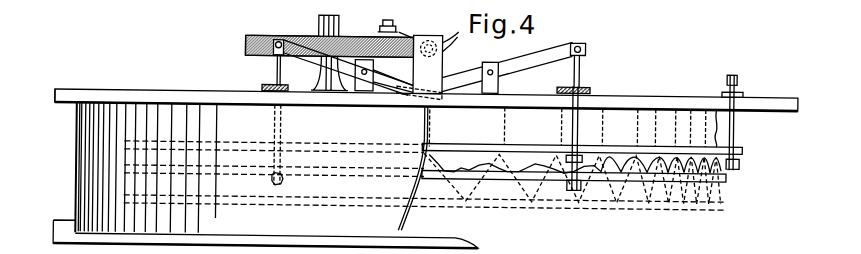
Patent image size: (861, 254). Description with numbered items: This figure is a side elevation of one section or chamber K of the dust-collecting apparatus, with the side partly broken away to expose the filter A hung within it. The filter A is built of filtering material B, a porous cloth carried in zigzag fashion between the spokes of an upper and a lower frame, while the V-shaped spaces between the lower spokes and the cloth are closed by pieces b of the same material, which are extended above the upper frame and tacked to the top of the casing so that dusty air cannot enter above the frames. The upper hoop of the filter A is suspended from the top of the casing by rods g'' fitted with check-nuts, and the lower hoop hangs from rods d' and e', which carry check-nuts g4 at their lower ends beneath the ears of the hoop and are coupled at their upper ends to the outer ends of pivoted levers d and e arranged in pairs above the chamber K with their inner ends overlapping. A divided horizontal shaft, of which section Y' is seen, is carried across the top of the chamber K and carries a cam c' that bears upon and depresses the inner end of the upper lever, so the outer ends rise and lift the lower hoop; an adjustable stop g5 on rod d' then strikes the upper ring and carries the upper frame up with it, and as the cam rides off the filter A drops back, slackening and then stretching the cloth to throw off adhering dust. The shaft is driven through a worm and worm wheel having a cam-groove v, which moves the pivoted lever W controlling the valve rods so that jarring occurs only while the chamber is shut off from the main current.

The filter A is at (150, 89).
The chamber or casing K is at (77, 148).
The cam-groove v is at (245, 46).
The pivoted lever W is at (383, 23).
The cam c' is at (420, 56).
The shaft section Y' is at (428, 35).
The pivoted arm or lever d is at (507, 65).
The suspending-rod d' is at (579, 68).
The pivoted arm or lever e is at (347, 68).
The suspending-rod e' is at (279, 65).
The check-nut g4 is at (284, 178).
The adjustable block or stop g5 is at (598, 142).
The suspending-rod g'' is at (744, 123).
The pieces of filtering material b is at (573, 129).
The filtering material B is at (718, 125).